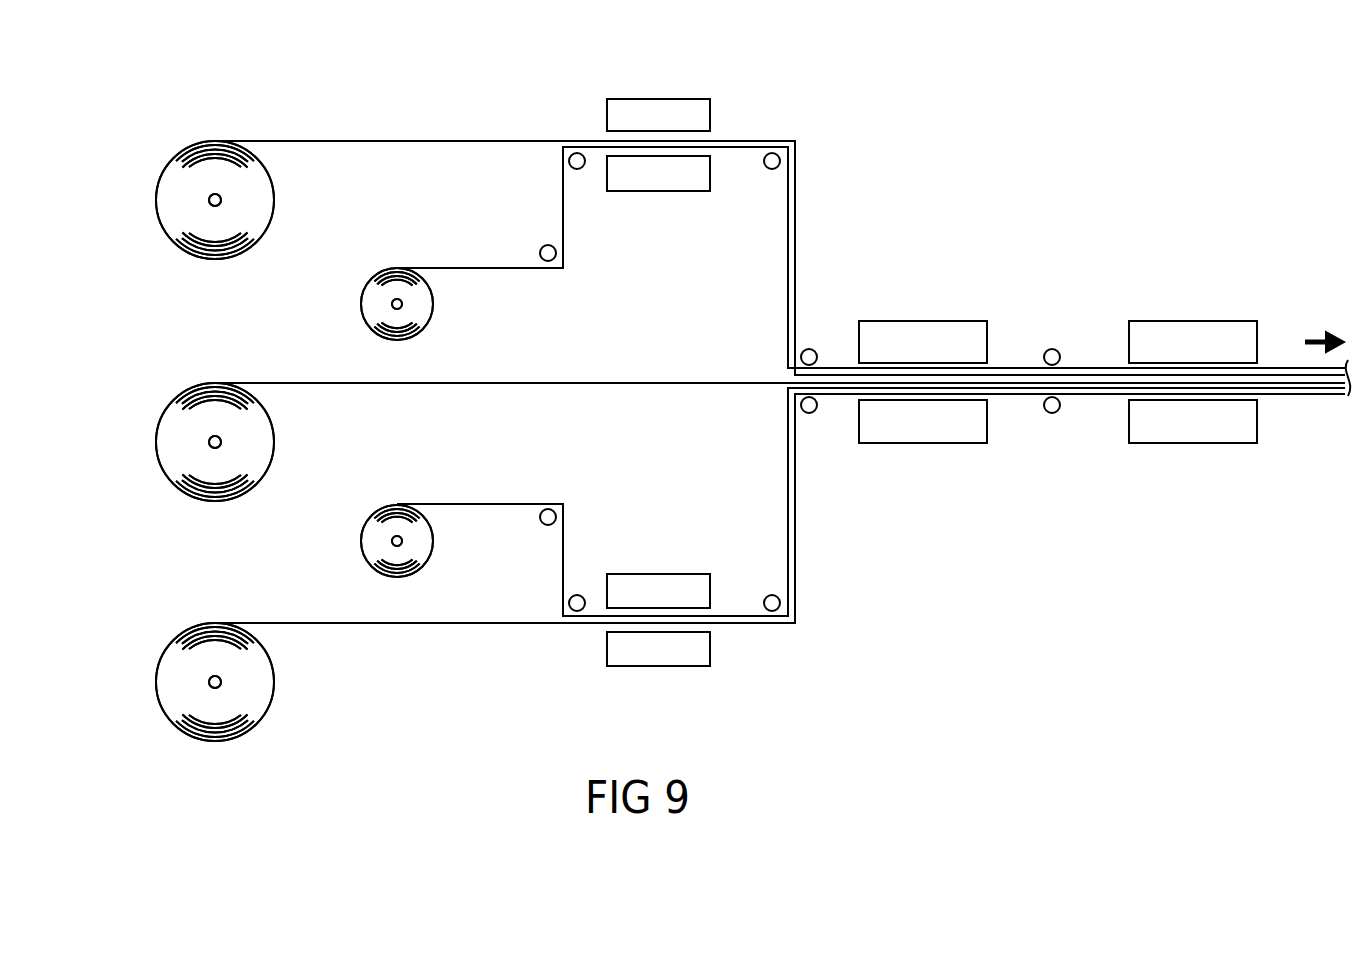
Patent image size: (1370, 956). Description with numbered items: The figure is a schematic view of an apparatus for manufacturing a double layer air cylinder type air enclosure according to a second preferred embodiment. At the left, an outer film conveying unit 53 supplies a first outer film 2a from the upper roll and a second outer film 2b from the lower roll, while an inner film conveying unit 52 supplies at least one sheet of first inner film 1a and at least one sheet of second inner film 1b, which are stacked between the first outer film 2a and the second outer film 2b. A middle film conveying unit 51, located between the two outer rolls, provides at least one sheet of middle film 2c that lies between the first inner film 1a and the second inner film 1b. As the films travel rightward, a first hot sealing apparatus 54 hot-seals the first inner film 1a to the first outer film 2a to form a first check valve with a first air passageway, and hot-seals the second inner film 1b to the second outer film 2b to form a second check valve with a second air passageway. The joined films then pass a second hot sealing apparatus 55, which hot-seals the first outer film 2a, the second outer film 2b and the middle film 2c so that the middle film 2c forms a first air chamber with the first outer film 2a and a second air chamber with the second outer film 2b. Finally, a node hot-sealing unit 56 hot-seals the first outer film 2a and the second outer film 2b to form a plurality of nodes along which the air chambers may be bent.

The first outer film 2a is at (215, 141).
The second outer film 2b is at (215, 623).
The middle film 2c is at (215, 383).
The first inner film 1a is at (395, 266).
The second inner film 1b is at (396, 503).
The middle film conveying unit 51 is at (175, 427).
The inner film conveying unit 52 is at (370, 297).
The outer film conveying unit 53 is at (172, 184).
The first hot sealing apparatus 54 is at (687, 117).
The second hot sealing apparatus 55 is at (935, 348).
The node hot-sealing unit 56 is at (1202, 350).